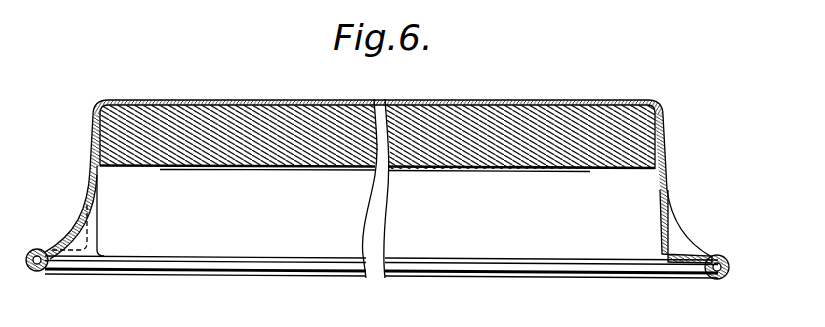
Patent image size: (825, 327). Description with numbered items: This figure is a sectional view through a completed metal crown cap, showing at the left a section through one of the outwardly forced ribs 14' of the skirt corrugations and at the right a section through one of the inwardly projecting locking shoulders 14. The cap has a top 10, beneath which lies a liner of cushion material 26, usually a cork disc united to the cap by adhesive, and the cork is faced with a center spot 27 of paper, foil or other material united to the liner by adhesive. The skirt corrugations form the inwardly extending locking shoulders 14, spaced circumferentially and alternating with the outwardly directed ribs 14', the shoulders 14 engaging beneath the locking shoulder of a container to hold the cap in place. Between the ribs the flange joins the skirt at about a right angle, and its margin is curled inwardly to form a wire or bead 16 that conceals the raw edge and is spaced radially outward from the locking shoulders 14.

The top 10 is at (300, 88).
The liner of cushion material 26 is at (565, 125).
The center spot 27 is at (467, 170).
The locking shoulder 14 is at (381, 240).
The outwardly directed rib 14' is at (377, 214).
The wire or bead 16 is at (38, 272).